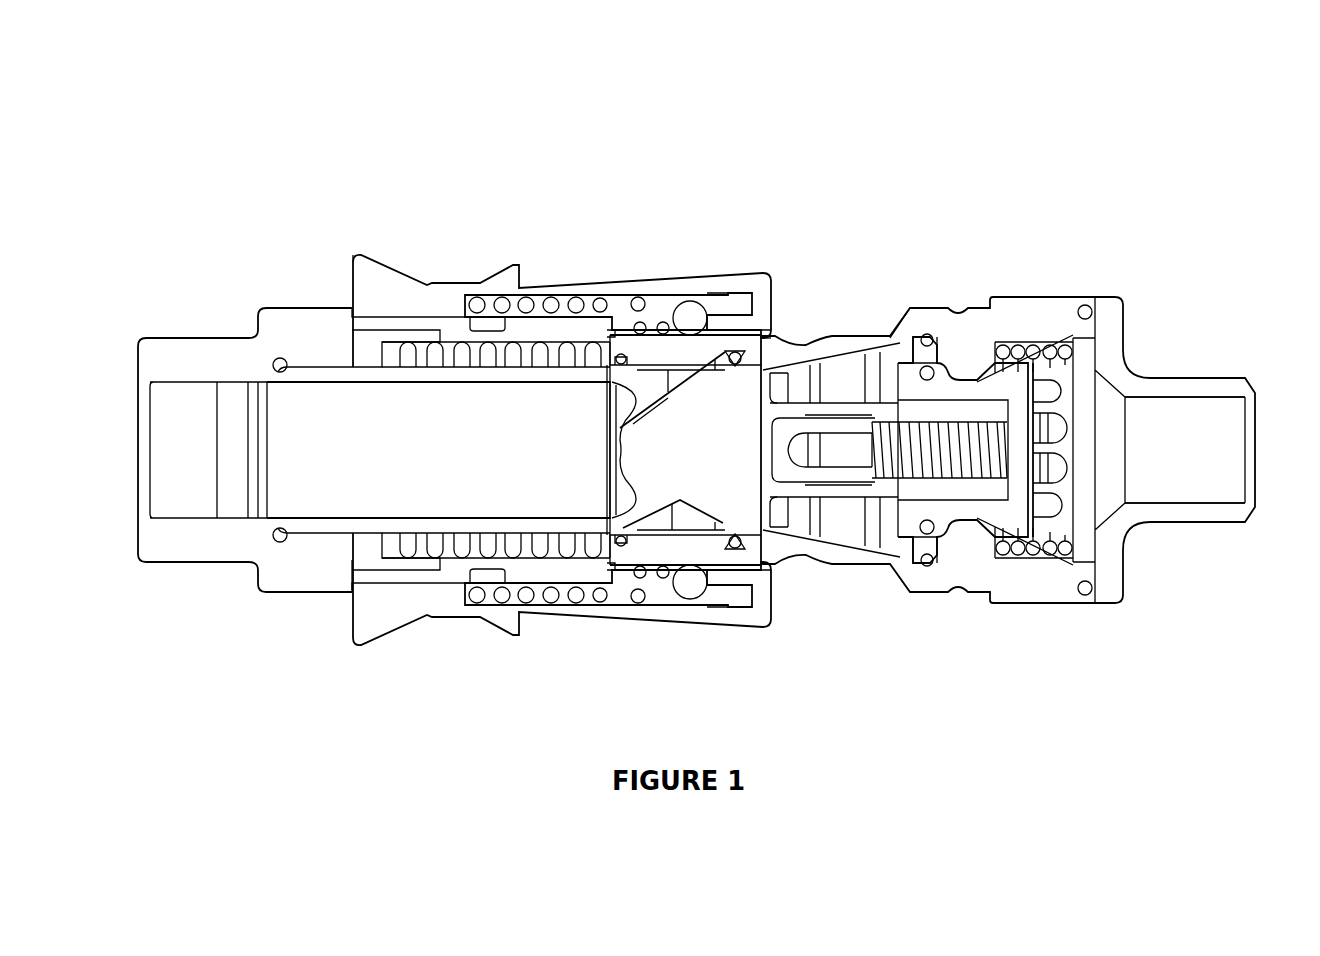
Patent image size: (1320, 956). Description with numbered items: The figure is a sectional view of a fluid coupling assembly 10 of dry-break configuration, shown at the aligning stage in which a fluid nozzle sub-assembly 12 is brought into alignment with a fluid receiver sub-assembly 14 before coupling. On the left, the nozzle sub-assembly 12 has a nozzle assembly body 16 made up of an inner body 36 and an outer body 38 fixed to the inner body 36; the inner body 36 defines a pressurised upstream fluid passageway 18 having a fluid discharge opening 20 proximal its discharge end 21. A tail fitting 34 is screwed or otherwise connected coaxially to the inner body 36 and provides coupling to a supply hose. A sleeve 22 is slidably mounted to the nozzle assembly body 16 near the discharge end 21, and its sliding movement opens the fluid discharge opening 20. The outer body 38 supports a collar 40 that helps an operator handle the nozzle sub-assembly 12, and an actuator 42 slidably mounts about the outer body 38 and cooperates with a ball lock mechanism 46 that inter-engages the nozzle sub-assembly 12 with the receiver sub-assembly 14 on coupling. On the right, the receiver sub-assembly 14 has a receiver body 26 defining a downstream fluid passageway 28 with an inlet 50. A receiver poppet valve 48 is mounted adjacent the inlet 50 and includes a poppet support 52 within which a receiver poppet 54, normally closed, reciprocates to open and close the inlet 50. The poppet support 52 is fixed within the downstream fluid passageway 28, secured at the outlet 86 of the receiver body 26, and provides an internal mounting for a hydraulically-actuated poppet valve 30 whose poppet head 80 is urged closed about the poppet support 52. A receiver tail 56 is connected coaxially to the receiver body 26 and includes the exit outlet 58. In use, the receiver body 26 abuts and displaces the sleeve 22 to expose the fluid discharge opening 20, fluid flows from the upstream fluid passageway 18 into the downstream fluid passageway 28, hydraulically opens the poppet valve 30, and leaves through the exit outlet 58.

The fluid coupling assembly 10 is at (723, 231).
The fluid nozzle sub-assembly 12 is at (398, 218).
The fluid receiver sub-assembly 14 is at (931, 251).
The nozzle assembly body 16 is at (350, 565).
The upstream fluid passageway 18 is at (446, 467).
The fluid discharge opening 20 is at (735, 338).
The discharge end 21 is at (703, 490).
The sleeve 22 is at (665, 355).
The receiver body 26 is at (915, 580).
The downstream fluid passageway 28 is at (850, 565).
The hydraulically-actuated poppet valve 30 is at (945, 352).
The tail fitting 34 is at (205, 545).
The inner body 36 is at (470, 573).
The outer body 38 is at (562, 577).
The collar 40 is at (383, 290).
The actuator 42 is at (697, 604).
The ball lock mechanism 46 is at (683, 298).
The receiver poppet valve 48 is at (838, 388).
The inlet 50 is at (781, 386).
The poppet support 52 is at (965, 375).
The receiver poppet 54 is at (818, 565).
The receiver tail 56 is at (1192, 510).
The exit outlet 58 is at (1190, 425).
The poppet head 80 is at (940, 560).
The outlet 86 is at (1082, 440).